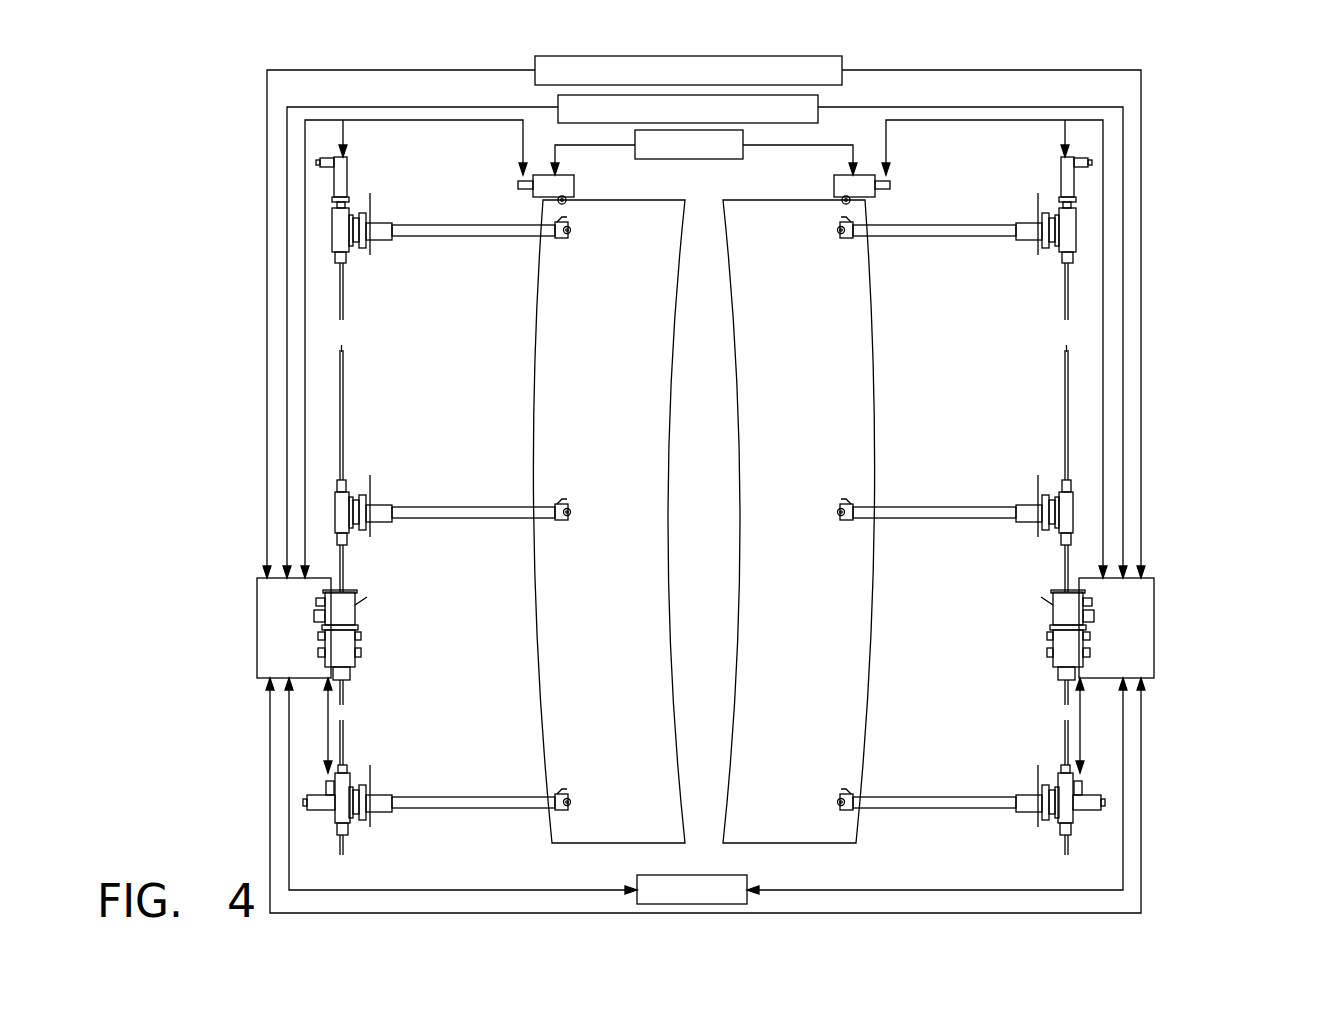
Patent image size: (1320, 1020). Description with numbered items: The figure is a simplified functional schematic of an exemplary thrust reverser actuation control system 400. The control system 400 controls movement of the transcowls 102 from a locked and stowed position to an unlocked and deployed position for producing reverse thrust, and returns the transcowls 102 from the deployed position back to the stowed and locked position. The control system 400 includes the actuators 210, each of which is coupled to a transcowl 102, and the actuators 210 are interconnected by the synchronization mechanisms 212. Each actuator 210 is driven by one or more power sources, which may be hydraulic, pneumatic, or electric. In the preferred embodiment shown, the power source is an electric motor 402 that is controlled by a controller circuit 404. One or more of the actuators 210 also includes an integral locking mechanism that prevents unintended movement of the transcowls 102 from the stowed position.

The control system 400 is at (1204, 100).
The transcowl 102 is at (640, 304).
The actuator 210 is at (392, 248).
The synchronization mechanism 212 is at (343, 396).
The electric motor 402 is at (351, 658).
The controller circuit 404 is at (265, 641).